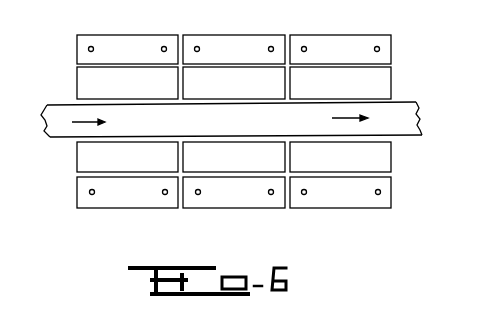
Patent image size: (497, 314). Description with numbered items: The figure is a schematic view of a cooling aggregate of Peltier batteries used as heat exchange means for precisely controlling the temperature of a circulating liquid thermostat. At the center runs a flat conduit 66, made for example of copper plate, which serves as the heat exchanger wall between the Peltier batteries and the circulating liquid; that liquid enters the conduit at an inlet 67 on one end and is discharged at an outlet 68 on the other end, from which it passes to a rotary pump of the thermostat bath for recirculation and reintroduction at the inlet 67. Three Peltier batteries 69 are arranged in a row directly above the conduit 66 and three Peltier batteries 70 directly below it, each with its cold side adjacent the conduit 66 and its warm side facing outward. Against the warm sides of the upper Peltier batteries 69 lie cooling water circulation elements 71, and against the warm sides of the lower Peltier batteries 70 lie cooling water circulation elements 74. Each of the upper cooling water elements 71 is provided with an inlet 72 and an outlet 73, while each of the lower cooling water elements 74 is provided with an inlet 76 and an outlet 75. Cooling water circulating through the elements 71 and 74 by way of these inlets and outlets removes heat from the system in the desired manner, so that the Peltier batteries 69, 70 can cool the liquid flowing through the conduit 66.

The flat conduit 66 is at (243, 127).
The liquid inlet 67 is at (45, 123).
The liquid outlet 68 is at (420, 119).
The Peltier battery 69 is at (137, 90).
The Peltier battery 70 is at (138, 164).
The cooling water circulation element 71 is at (234, 49).
The inlet 72 is at (92, 46).
The outlet 73 is at (165, 46).
The cooling water circulation element 74 is at (138, 198).
The outlet 75 is at (92, 195).
The inlet 76 is at (165, 195).